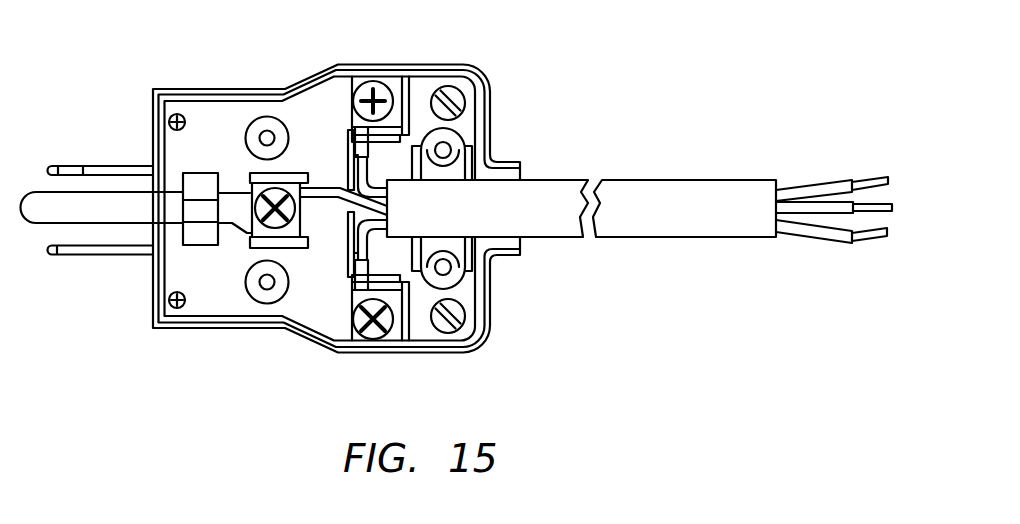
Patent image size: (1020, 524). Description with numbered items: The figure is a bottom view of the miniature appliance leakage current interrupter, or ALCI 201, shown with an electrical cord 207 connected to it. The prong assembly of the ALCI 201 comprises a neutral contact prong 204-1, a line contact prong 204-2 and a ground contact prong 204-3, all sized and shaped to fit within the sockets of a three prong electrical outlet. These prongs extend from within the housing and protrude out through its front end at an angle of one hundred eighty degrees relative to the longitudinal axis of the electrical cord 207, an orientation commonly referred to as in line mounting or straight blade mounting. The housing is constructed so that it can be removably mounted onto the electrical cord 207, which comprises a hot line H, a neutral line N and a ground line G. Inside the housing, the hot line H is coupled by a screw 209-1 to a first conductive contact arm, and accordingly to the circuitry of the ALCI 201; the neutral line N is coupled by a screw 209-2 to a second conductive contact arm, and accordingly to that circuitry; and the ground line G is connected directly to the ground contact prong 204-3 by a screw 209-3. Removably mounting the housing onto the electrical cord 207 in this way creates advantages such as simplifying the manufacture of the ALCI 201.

The miniature appliance leakage current interrupter (ALCI) 201 is at (188, 368).
The neutral contact prong 204-1 is at (106, 165).
The line contact prong 204-2 is at (116, 256).
The ground contact prong 204-3 is at (32, 202).
The electrical cord 207 is at (642, 238).
The screw 209-1 is at (380, 339).
The screw 209-2 is at (392, 87).
The screw 209-3 is at (243, 186).
The ground line G is at (330, 186).
The neutral line N is at (346, 157).
The hot line H is at (347, 258).